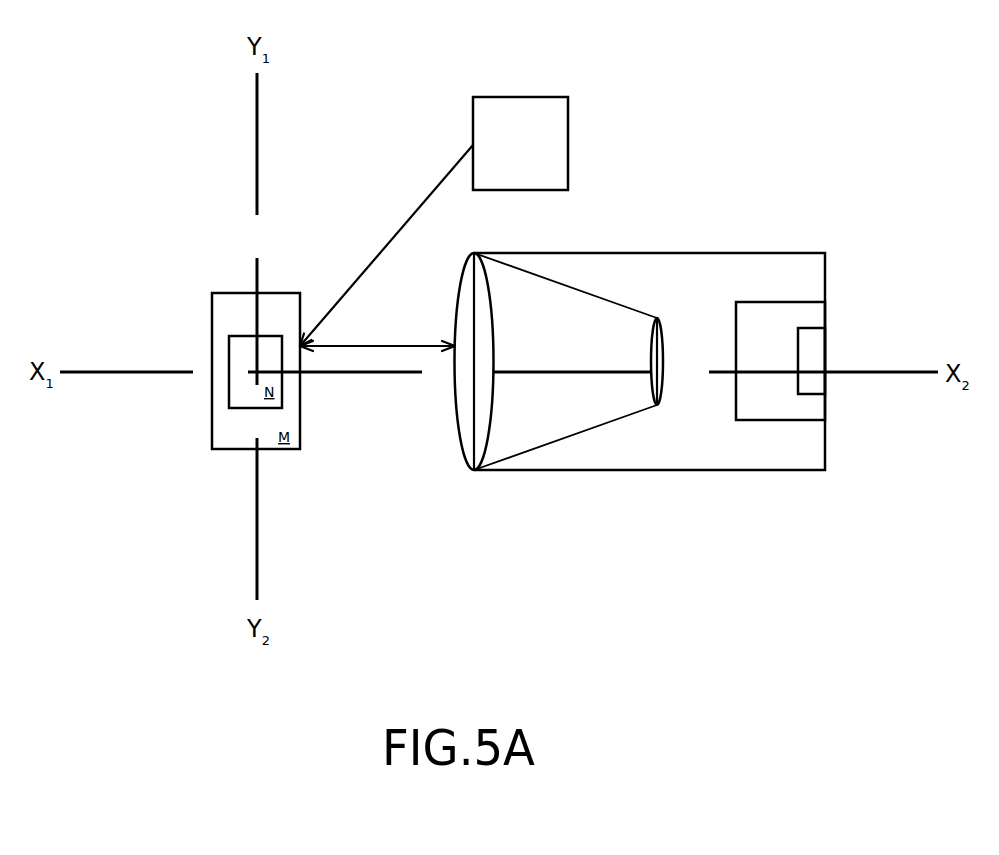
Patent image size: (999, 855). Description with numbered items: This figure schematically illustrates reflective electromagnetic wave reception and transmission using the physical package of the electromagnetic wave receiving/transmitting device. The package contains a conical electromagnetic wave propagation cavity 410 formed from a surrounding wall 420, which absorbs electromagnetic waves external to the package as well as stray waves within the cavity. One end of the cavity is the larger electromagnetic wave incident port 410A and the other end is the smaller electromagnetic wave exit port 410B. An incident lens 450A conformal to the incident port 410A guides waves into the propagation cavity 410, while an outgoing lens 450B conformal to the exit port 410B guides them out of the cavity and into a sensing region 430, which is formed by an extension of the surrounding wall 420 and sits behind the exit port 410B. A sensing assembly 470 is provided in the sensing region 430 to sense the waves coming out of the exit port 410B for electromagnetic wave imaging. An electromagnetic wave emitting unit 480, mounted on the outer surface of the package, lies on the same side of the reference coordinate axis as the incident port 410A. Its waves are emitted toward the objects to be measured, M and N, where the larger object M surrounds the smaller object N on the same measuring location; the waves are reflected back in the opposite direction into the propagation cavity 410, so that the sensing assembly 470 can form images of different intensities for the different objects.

The electromagnetic wave propagation cavity 410 is at (567, 399).
The electromagnetic wave incident port 410A is at (457, 399).
The incident lens 450A is at (473, 432).
The electromagnetic wave exit port 410B is at (677, 425).
The outgoing lens 450B is at (662, 382).
The surrounding wall 420 is at (649, 361).
The sensing region 430 is at (780, 361).
The sensing assembly 470 is at (808, 359).
The electromagnetic wave emitting unit 480 is at (523, 123).